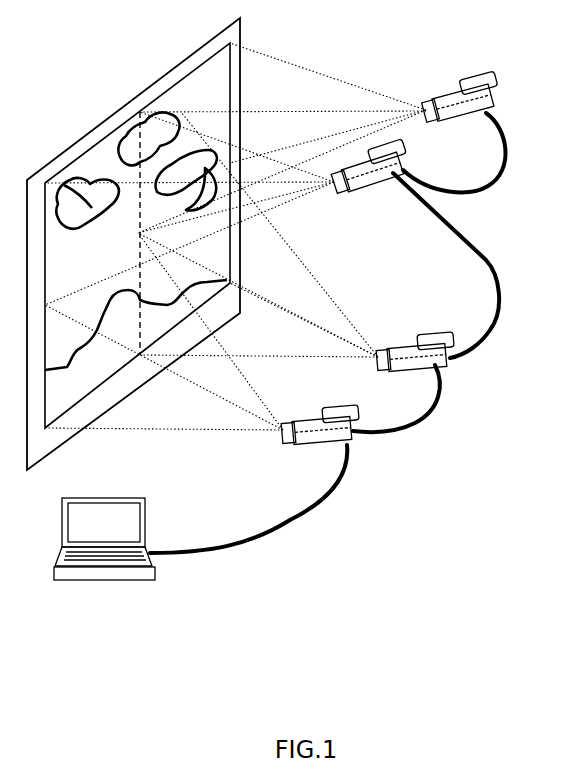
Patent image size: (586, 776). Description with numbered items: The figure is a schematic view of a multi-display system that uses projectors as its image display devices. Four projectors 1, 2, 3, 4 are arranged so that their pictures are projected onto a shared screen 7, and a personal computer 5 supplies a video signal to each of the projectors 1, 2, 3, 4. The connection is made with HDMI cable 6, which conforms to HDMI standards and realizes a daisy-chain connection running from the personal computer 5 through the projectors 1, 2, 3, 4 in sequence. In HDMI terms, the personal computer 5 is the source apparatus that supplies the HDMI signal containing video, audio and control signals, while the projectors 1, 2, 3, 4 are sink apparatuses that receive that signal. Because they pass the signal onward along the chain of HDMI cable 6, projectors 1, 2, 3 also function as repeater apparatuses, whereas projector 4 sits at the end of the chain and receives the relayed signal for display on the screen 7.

The projector 1 is at (362, 420).
The projector 2 is at (438, 347).
The projector 3 is at (376, 190).
The projector 4 is at (457, 93).
The personal computer 5 is at (150, 572).
The HDMI cable 6 is at (505, 157).
The screen 7 is at (53, 158).